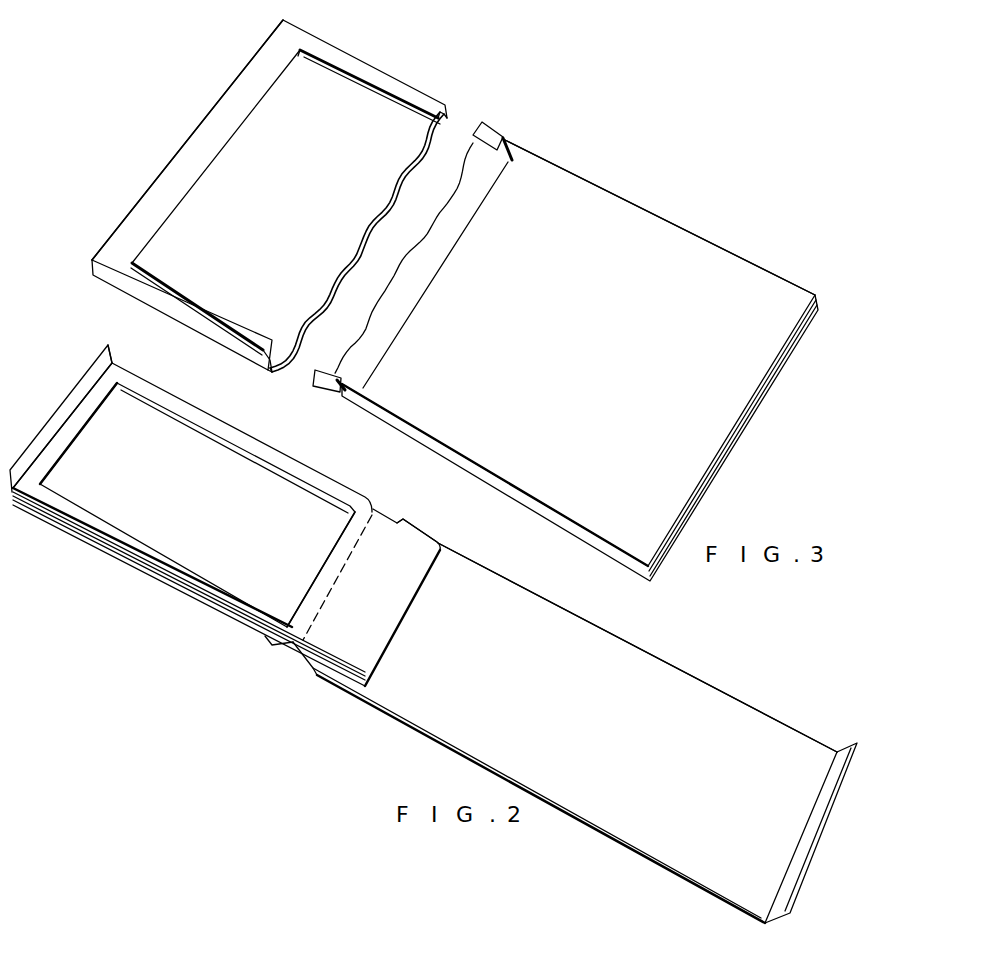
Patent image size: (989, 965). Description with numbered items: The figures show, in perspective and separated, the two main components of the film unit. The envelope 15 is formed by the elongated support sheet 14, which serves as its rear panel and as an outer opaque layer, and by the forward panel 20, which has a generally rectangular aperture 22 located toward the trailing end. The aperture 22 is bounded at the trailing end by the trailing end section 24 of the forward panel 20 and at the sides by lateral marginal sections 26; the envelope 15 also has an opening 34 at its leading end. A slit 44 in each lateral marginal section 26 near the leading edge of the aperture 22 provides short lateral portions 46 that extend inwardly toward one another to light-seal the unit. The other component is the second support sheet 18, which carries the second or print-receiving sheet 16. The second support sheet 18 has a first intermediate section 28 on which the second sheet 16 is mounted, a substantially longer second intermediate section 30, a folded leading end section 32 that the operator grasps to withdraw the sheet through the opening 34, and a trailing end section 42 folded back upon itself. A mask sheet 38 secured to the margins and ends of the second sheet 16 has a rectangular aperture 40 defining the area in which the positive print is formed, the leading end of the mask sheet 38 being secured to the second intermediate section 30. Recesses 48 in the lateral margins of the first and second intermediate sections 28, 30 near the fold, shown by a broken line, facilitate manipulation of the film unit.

In FIG. 3, the support sheet 14 is at (282, 241).
In FIG. 3, the envelope 15 is at (643, 193).
In FIG. 2, the second sheet 16 is at (198, 510).
In FIG. 2, the second support sheet 18 is at (436, 748).
In FIG. 3, the forward panel 20 is at (596, 333).
In FIG. 3, the aperture 22 is at (300, 56).
In FIG. 3, the trailing end section 24 is at (182, 170).
In FIG. 3, the lateral marginal sections 26 is at (413, 87).
In FIG. 2, the first intermediate section 28 is at (127, 566).
In FIG. 2, the second intermediate section 30 is at (600, 795).
In FIG. 2, the leading end section 32 is at (800, 858).
In FIG. 3, the opening 34 is at (727, 453).
In FIG. 2, the mask sheet 38 is at (110, 378).
In FIG. 2, the aperture 40 is at (58, 495).
In FIG. 2, the trailing end section 42 is at (74, 400).
In FIG. 3, the slit 44 is at (333, 387).
In FIG. 3, the short lateral portions 46 is at (350, 393).
In FIG. 2, the recesses 48 is at (300, 655).